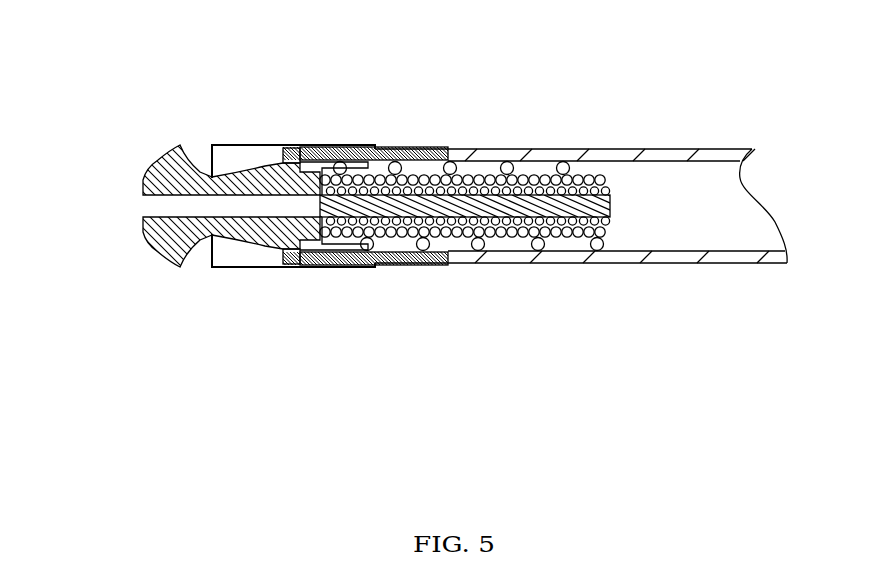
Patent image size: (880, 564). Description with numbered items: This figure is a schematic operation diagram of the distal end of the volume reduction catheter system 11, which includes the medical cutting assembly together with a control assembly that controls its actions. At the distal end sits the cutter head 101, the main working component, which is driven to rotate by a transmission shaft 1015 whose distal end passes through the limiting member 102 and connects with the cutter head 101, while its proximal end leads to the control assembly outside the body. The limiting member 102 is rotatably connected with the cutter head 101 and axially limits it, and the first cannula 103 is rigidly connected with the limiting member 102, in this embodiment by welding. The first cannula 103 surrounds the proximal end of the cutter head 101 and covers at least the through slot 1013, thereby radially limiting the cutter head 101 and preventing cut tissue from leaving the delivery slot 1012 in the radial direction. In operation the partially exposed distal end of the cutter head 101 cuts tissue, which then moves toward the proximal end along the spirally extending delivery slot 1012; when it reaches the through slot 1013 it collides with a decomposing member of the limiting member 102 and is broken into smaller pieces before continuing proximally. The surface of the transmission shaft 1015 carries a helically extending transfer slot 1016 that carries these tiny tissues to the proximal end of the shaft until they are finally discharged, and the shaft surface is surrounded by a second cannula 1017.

The volume reduction catheter system 11 is at (418, 407).
The cutter head 101 is at (170, 210).
The delivery slot 1012 is at (240, 173).
The first cannula 103 is at (250, 145).
The through slot 1013 is at (296, 148).
The limiting member 102 is at (385, 147).
The transmission shaft 1015 is at (518, 148).
The transfer slot 1016 is at (560, 240).
The second cannula 1017 is at (655, 148).